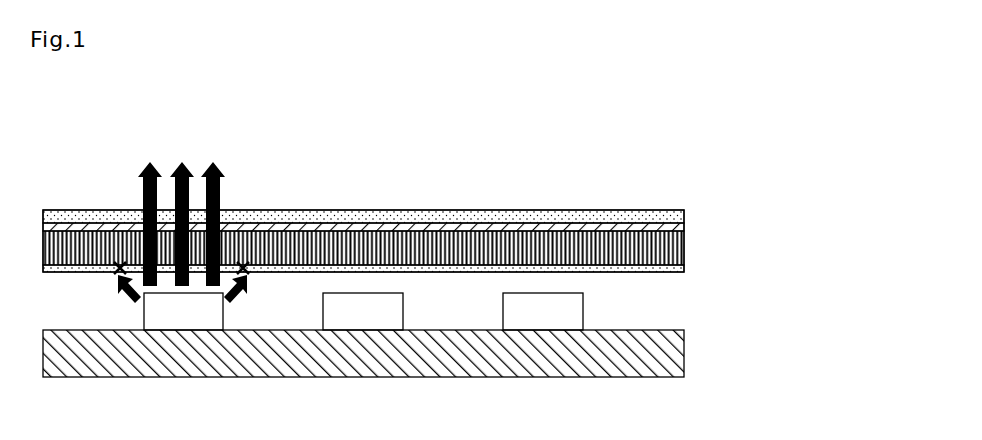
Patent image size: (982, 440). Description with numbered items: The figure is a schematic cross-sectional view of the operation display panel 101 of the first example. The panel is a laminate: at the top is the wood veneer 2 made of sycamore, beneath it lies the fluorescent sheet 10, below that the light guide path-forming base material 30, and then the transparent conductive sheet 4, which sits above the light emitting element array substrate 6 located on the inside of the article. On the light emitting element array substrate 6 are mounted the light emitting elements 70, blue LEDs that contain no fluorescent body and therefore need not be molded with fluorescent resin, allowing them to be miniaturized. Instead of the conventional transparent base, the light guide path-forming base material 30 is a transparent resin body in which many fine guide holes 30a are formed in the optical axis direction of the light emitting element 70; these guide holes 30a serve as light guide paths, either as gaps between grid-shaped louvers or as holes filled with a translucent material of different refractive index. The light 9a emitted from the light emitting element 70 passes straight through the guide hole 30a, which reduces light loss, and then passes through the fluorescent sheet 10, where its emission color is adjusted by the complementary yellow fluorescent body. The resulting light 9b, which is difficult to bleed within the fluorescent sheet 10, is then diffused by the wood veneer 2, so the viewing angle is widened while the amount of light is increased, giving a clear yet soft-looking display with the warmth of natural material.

The operation display panel 101 is at (890, 113).
The wood veneer 2 is at (684, 211).
The fluorescent sheet 10 is at (684, 223).
The guide hole 30a is at (550, 226).
The light guide path-forming base material 30 is at (684, 246).
The transparent conductive sheet 4 is at (684, 268).
The light emitting element 70 is at (583, 303).
The light emitting element array substrate 6 is at (684, 355).
The light 9b is at (183, 164).
The light 9a is at (183, 262).